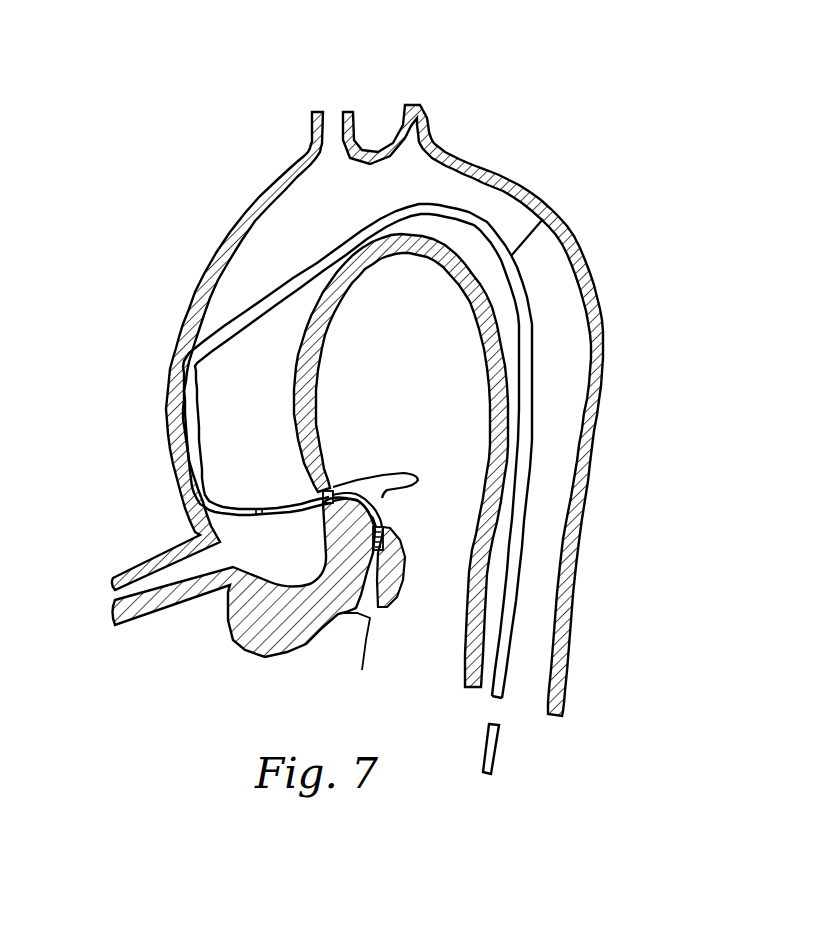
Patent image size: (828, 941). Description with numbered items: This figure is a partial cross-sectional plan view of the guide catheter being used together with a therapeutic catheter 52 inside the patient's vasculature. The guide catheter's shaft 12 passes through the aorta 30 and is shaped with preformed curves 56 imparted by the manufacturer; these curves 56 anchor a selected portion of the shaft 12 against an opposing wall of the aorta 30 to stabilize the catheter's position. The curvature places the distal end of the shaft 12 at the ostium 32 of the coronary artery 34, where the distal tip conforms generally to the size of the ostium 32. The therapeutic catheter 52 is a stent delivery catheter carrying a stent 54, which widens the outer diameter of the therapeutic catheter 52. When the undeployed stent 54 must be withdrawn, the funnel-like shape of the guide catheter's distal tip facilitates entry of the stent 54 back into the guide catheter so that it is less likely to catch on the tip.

The shaft 12 is at (556, 214).
The aorta 30 is at (601, 323).
The ostium 32 is at (330, 489).
The coronary artery 34 is at (360, 477).
The therapeutic catheter 52 is at (383, 505).
The stent 54 is at (392, 530).
The curves or bends 56 is at (475, 222).